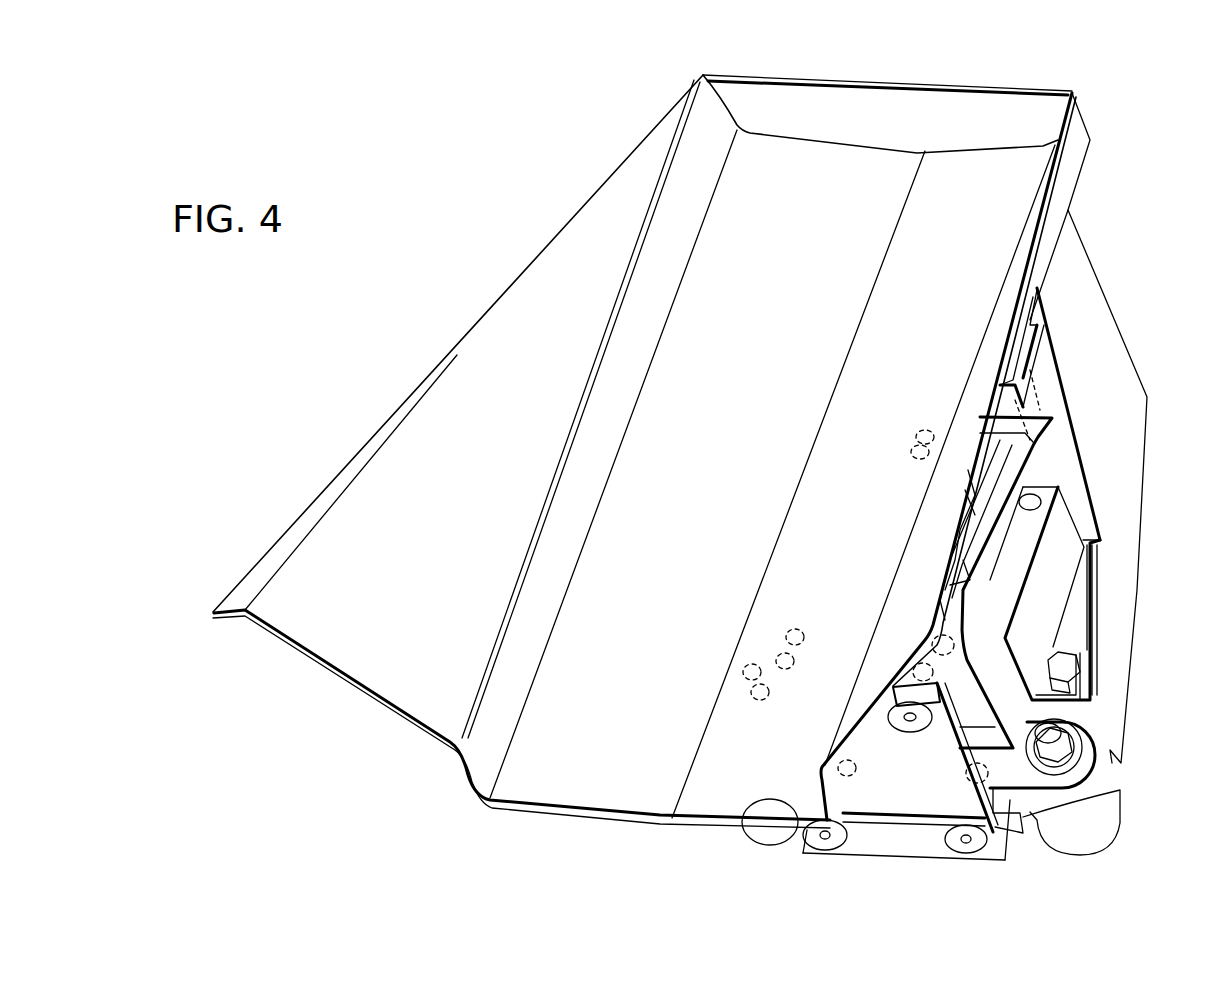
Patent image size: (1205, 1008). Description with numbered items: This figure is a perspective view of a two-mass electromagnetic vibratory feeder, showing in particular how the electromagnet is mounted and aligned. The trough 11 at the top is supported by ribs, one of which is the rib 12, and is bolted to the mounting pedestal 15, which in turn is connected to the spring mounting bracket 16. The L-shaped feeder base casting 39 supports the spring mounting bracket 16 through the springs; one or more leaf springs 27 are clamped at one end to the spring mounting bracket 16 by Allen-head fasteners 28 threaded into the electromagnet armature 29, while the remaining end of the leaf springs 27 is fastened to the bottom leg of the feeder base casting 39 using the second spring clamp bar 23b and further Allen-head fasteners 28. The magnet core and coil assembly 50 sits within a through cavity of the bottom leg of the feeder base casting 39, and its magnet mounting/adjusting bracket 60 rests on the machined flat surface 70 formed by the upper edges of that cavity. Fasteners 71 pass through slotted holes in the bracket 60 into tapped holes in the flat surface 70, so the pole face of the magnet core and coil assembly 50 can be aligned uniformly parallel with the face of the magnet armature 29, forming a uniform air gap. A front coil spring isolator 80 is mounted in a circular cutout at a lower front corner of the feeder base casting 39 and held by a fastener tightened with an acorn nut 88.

The trough 11 is at (978, 86).
The feeder base casting 39 is at (1096, 256).
The rib 12 is at (1043, 346).
The spring mounting bracket 16 is at (1030, 465).
The magnet core and coil assembly 50 is at (1063, 528).
The mounting pedestal 15 is at (968, 545).
The magnet mounting/adjusting bracket 60 is at (1077, 628).
The fasteners 71 is at (1063, 665).
The machined flat surface 70 is at (1075, 688).
The electromagnet armature 29 is at (1020, 712).
The acorn nuts 88 is at (1080, 745).
The front coil spring isolator 80 is at (1110, 826).
The leaf springs 27 is at (903, 798).
The second spring clamp bar 23b is at (873, 843).
The Allen-head fasteners 28 is at (975, 852).